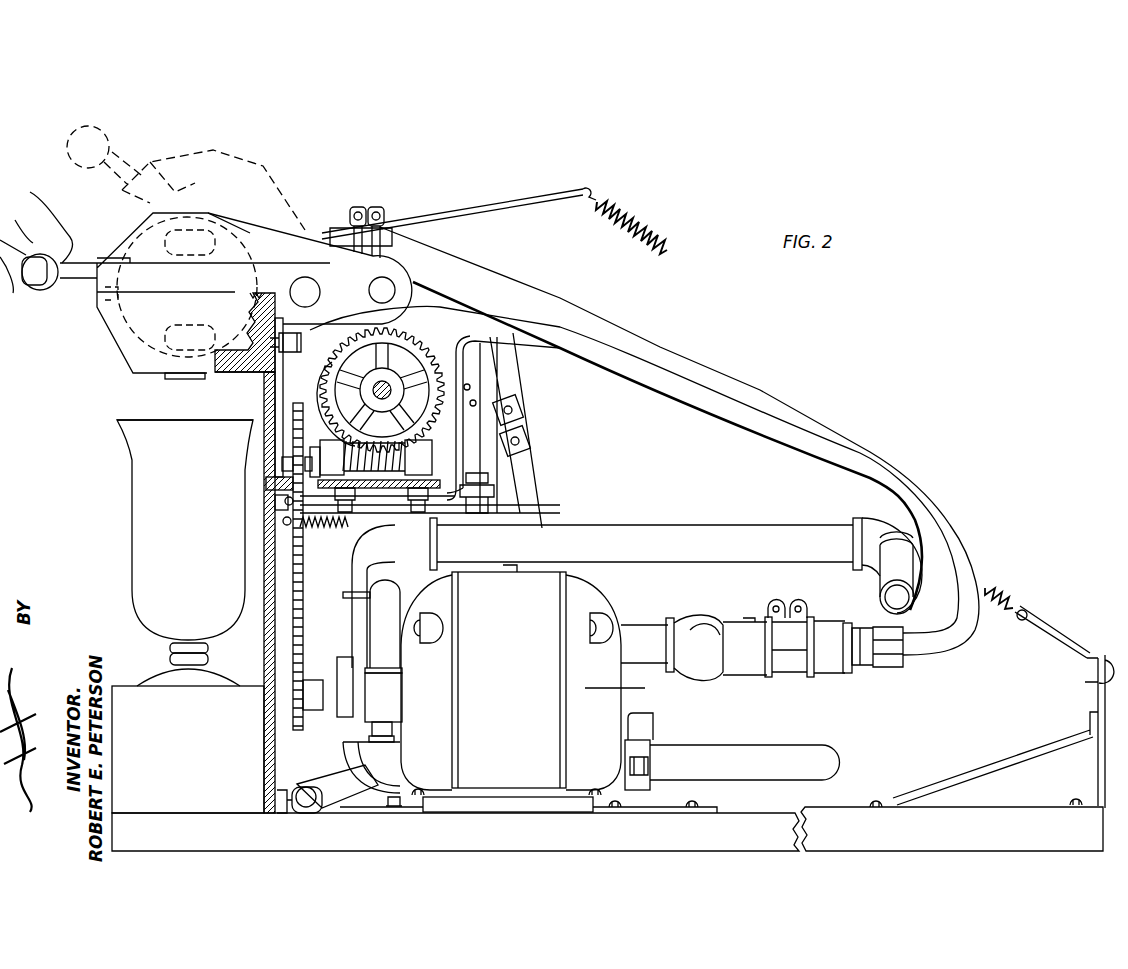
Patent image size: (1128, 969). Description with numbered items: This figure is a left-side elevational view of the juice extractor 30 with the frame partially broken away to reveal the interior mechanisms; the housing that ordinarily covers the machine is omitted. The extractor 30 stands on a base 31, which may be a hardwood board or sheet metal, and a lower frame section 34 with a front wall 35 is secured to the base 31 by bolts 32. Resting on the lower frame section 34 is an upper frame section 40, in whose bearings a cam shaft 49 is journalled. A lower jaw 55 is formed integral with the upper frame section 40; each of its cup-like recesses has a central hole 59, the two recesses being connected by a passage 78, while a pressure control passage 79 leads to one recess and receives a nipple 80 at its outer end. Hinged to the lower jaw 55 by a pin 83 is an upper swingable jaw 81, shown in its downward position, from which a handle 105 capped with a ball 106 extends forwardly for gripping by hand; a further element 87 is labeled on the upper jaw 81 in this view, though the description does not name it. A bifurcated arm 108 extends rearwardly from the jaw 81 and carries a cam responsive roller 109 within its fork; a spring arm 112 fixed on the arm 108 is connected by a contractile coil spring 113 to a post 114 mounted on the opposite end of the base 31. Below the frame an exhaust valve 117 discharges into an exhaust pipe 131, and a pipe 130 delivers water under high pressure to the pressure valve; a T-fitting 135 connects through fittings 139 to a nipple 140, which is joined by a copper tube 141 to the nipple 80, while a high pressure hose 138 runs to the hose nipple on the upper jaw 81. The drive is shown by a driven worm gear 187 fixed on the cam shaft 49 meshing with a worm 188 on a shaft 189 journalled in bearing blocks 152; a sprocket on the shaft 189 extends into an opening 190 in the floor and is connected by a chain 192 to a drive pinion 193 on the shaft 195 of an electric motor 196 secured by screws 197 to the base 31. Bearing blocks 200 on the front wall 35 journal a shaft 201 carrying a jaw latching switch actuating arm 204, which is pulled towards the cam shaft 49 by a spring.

The juice extractor 30 is at (862, 328).
The base 31 is at (998, 820).
The bolts 32 is at (397, 806).
The lower frame section 34 is at (260, 763).
The front wall 35 is at (263, 718).
The upper frame section 40 is at (255, 456).
The cam shaft 49 is at (380, 390).
The lower jaw 55 is at (125, 340).
The central hole 59 is at (262, 296).
The passage 78 is at (160, 352).
The pressure control passage 79 is at (226, 373).
The nipple 80 is at (283, 352).
The upper swingable jaw 81 is at (143, 237).
The pin 83 is at (312, 292).
The lever arm 87 is at (210, 232).
The handle 105 is at (78, 268).
The ball 106 is at (46, 288).
The bifurcated arm 108 is at (384, 250).
The cam responsive roller 109 is at (412, 283).
The spring arm 112 is at (438, 224).
The contractile coil spring 113 is at (633, 218).
The post 114 is at (1092, 697).
The exhaust valve 117 is at (520, 516).
The pipe 130 is at (790, 755).
The exhaust pipe 131 is at (713, 527).
The T-fitting 135 is at (676, 672).
The high pressure hose 138 is at (625, 340).
The fittings 139 is at (748, 662).
The nipple 140 is at (830, 663).
The copper tube 141 is at (785, 420).
The bearing blocks 152 is at (286, 502).
The driven worm gear 187 is at (398, 335).
The worm 188 is at (355, 466).
The shaft 189 is at (288, 466).
The opening 190 is at (286, 514).
The chain 192 is at (292, 588).
The drive pinion 193 is at (310, 690).
The shaft 195 is at (358, 692).
The electric motor 196 is at (535, 690).
The screws 197 is at (440, 793).
The bearing blocks 200 is at (282, 798).
The shaft 201 is at (300, 812).
The jaw latching switch actuating arm 204 is at (333, 782).